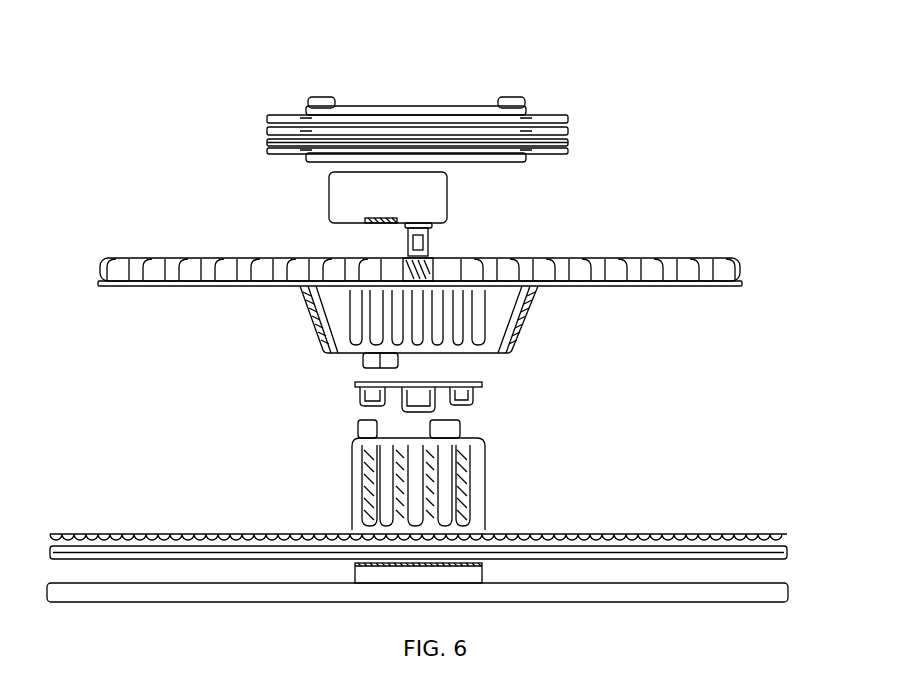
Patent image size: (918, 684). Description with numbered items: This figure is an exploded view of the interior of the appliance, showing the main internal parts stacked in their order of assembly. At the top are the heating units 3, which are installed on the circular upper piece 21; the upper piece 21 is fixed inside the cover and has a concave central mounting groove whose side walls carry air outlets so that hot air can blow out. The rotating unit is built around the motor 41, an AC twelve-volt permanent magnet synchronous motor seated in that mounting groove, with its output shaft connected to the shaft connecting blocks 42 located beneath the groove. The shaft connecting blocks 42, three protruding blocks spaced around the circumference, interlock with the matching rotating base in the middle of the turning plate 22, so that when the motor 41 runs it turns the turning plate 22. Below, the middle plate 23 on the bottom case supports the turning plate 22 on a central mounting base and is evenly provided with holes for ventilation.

The heating units 3 is at (566, 123).
The motor 41 is at (343, 194).
The upper piece 21 is at (345, 300).
The shaft connecting blocks 42 is at (478, 394).
The turning plate 22 is at (556, 535).
The middle plate 23 is at (710, 592).